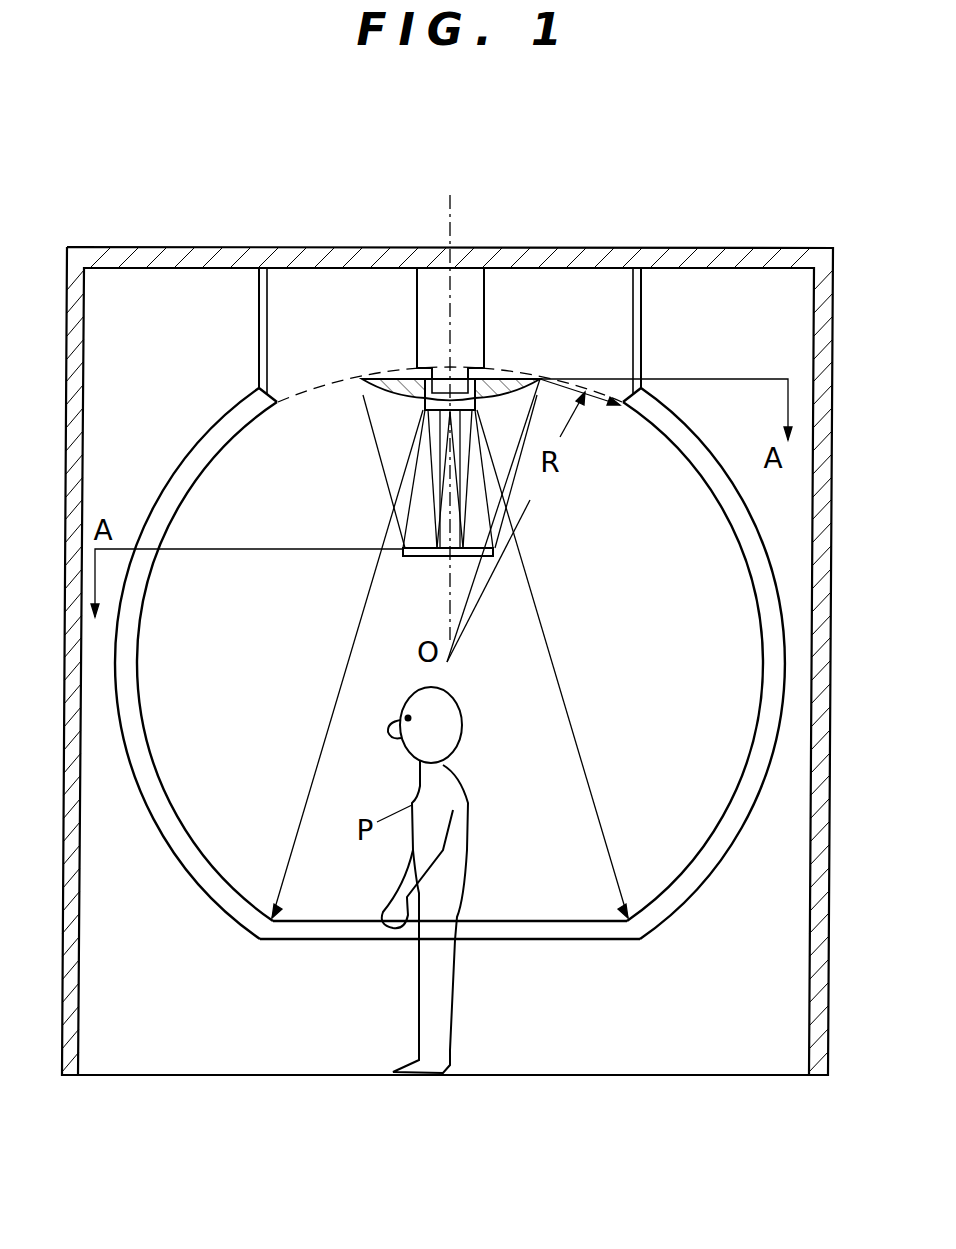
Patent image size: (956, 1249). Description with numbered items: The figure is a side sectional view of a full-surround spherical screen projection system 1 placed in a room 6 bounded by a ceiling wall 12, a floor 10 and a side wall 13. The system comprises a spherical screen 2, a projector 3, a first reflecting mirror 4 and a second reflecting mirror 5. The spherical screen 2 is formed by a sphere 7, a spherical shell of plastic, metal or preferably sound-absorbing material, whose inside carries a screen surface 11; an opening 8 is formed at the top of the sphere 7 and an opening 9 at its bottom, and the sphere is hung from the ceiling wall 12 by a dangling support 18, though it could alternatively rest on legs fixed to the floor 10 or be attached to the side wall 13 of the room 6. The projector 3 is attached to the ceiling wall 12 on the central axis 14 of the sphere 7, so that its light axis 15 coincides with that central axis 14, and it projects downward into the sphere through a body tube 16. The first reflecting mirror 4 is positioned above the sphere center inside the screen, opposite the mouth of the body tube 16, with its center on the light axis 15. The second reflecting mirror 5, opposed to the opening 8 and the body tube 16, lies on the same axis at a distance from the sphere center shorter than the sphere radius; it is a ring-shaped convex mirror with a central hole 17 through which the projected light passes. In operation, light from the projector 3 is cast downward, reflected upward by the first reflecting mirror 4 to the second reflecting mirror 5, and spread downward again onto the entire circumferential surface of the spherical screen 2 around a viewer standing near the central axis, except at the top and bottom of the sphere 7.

The full-surround spherical screen projection system 1 is at (446, 127).
The spherical screen 2 is at (660, 887).
The projector 3 is at (473, 314).
The first reflecting mirror 4 is at (427, 560).
The second reflecting mirror 5 is at (380, 383).
The room 6 is at (680, 325).
The sphere 7 is at (205, 430).
The opening 8 is at (278, 387).
The opening 9 is at (342, 932).
The floor 10 is at (213, 1073).
The screen surface 11 is at (203, 862).
The ceiling wall 12 is at (145, 247).
The side wall of housing 13 is at (808, 975).
The central axis 14 is at (458, 237).
The light axis 15 is at (448, 518).
The body tube 16 is at (474, 384).
The central hole 17 is at (428, 397).
The dangling support 18 is at (260, 325).